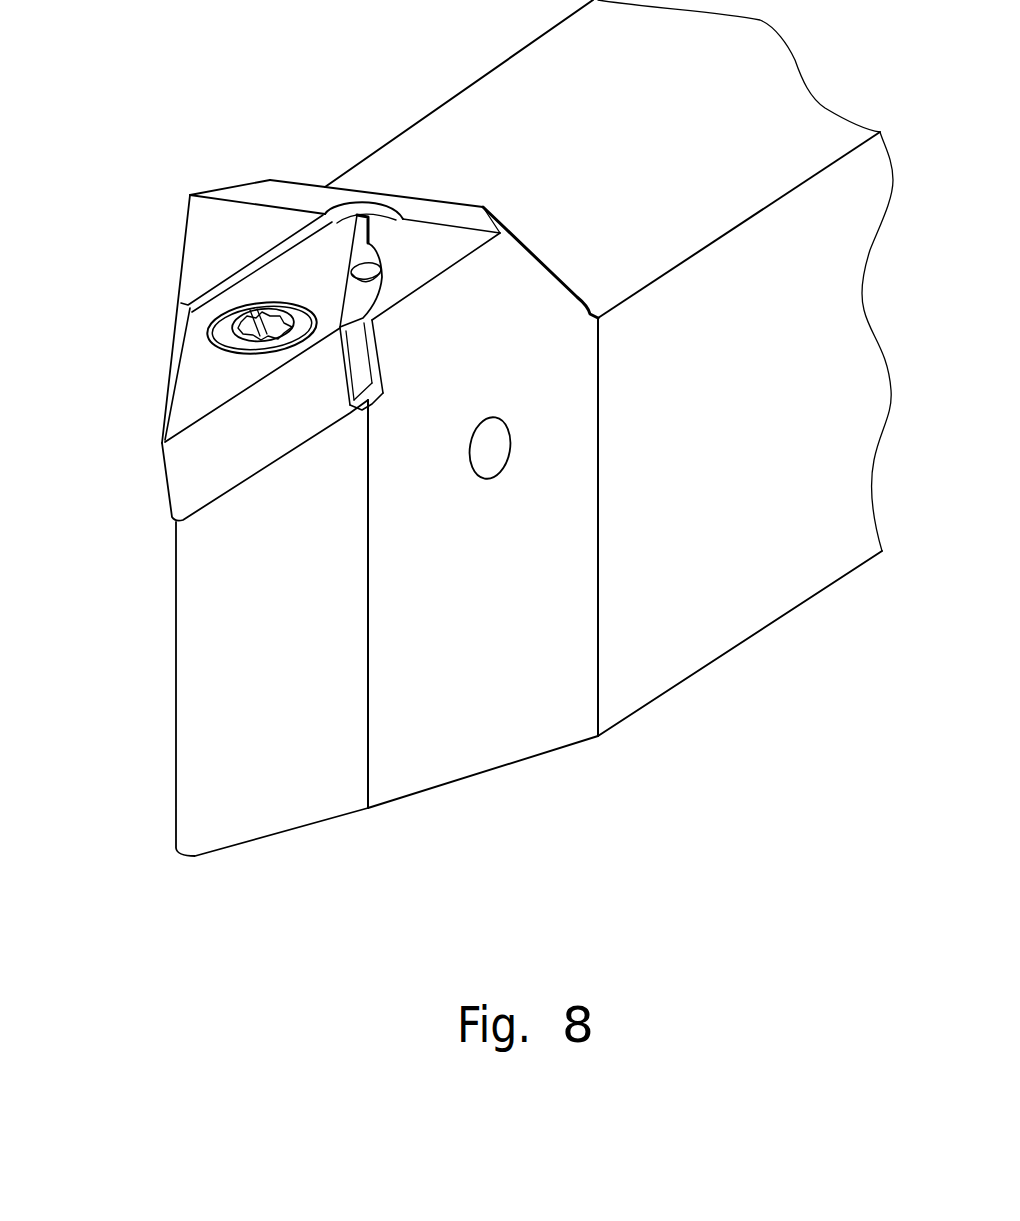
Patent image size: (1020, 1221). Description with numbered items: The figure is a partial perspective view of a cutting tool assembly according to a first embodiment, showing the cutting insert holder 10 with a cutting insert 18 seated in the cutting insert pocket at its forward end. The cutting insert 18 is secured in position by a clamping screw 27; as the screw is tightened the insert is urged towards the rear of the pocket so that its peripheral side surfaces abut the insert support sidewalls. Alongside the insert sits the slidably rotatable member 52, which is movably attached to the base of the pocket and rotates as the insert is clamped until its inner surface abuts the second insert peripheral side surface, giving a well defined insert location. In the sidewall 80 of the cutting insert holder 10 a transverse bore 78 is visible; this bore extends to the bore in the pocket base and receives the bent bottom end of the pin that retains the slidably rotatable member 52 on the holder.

The cutting insert holder 10 is at (735, 828).
The cutting insert 18 is at (197, 403).
The clamping screw 27 is at (222, 330).
The slidably rotatable member 52 is at (369, 242).
The transverse bore 78 is at (485, 460).
The sidewall 80 is at (477, 702).